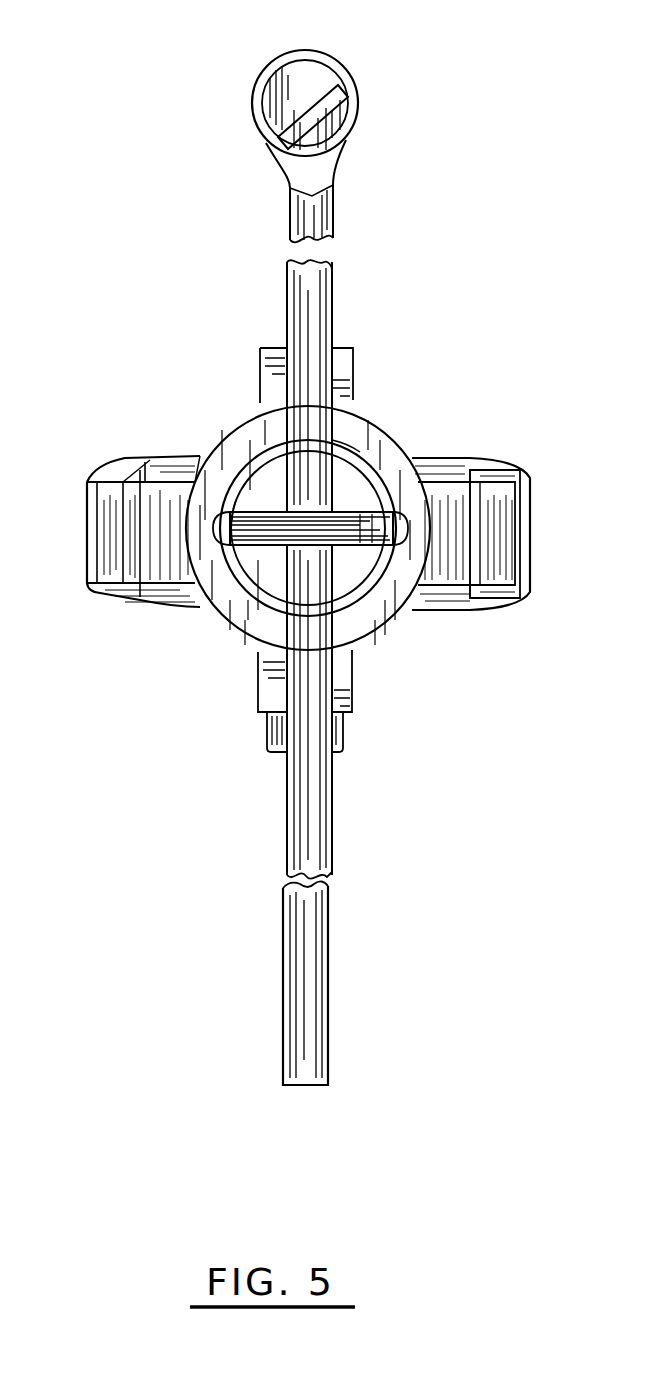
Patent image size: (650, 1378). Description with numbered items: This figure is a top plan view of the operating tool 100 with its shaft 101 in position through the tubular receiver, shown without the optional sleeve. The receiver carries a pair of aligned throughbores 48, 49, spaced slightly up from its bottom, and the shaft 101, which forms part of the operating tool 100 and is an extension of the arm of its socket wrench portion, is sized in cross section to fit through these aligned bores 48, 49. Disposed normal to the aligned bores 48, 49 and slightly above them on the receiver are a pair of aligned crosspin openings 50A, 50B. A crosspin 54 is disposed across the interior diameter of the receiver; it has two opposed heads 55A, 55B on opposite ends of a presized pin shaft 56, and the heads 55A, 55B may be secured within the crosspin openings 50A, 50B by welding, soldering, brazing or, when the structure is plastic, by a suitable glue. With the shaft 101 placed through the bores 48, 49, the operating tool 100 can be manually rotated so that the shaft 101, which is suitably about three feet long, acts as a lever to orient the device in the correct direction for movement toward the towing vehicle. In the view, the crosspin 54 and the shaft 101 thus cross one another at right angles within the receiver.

The operating tool 100 is at (208, 97).
The shaft 101 is at (298, 953).
The throughbore 48 is at (340, 620).
The throughbore 49 is at (372, 450).
The crosspin opening 50A is at (342, 447).
The crosspin opening 50B is at (226, 510).
The crosspin 54 is at (262, 546).
The crosspin head 55A is at (401, 527).
The crosspin head 55B is at (213, 527).
The pin shaft 56 is at (366, 548).